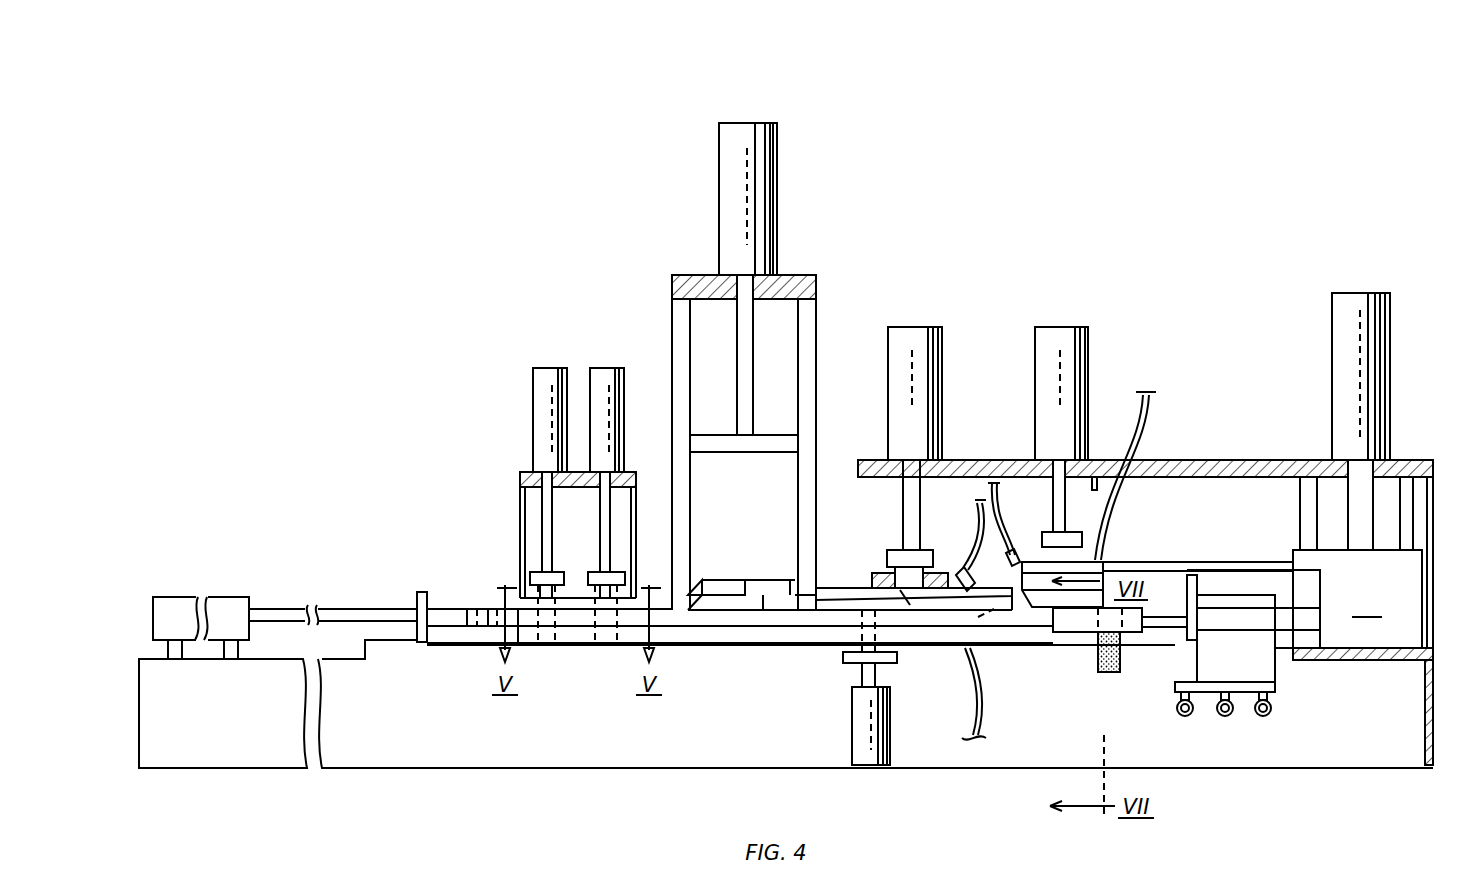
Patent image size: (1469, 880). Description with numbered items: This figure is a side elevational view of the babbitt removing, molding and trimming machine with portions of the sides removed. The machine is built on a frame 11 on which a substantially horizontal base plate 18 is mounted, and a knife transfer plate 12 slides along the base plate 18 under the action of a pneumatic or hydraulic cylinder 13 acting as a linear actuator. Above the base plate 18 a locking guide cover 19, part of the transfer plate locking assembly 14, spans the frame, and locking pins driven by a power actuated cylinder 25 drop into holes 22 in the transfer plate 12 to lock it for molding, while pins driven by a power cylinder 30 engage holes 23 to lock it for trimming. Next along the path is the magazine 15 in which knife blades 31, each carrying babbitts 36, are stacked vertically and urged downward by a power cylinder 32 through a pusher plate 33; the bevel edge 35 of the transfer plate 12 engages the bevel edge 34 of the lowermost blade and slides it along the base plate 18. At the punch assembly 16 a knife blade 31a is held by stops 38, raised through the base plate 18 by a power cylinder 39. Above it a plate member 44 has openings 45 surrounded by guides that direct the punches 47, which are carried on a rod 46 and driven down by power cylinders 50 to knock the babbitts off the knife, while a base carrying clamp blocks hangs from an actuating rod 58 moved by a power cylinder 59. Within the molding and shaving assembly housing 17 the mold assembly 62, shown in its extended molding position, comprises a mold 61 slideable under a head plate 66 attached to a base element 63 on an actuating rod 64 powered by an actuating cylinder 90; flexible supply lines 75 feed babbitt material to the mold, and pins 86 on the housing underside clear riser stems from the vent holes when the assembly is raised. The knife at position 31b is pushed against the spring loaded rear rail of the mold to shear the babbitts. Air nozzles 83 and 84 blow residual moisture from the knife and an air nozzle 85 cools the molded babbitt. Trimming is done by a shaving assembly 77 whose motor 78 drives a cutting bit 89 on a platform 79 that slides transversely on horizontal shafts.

The frame 11 is at (218, 770).
The knife transfer plate 12 is at (424, 600).
The cylinder 13 is at (178, 607).
The transfer plate locking assembly 14 is at (521, 478).
The magazine 15 is at (678, 276).
The punch assembly 16 is at (955, 460).
The molding and shaving assembly housing 17 is at (1230, 460).
The base plate 18 is at (575, 637).
The locking guide cover 19 is at (526, 592).
The holes 22 is at (470, 626).
The holes 23 is at (488, 602).
The power actuated cylinder 25 is at (553, 370).
The power cylinder 30 is at (610, 370).
The knife blades 31 is at (722, 590).
The knife blade 31a is at (886, 614).
The knife position 31b is at (990, 630).
The power cylinder 32 is at (777, 198).
The pusher plate 33 is at (795, 447).
The bevel edge 34 is at (722, 580).
The bevel edge 35 is at (828, 615).
The babbitts 36 is at (778, 580).
The stops 38 is at (853, 632).
The power cylinder 39 is at (862, 748).
The plate member 44 is at (832, 586).
The openings 45 is at (898, 598).
The rod 46 is at (927, 570).
The punches 47 is at (893, 570).
The power cylinders 50 is at (918, 340).
The actuating rod 58 is at (1056, 516).
The power cylinder 59 is at (1062, 340).
The mold 61 is at (1093, 635).
The mold assembly 62 is at (1363, 657).
The base element 63 is at (1215, 556).
The actuating rod 64 is at (1358, 487).
The head plate 66 is at (1002, 612).
The flexible supply lines 75 is at (1100, 485).
The shaving assembly 77 is at (1278, 668).
The motor 78 is at (1182, 665).
The platform 79 is at (1275, 692).
The nozzle 83 is at (960, 568).
The nozzle 84 is at (983, 688).
The air nozzle 85 is at (982, 480).
The pins 86 is at (1100, 470).
The cutting bit 89 is at (1110, 673).
The actuating cylinder 90 is at (1360, 312).